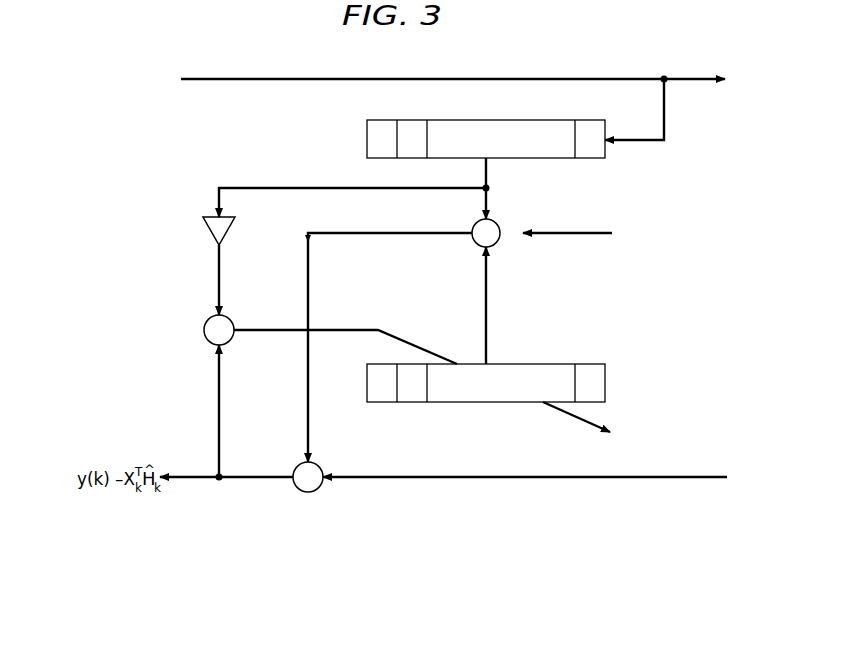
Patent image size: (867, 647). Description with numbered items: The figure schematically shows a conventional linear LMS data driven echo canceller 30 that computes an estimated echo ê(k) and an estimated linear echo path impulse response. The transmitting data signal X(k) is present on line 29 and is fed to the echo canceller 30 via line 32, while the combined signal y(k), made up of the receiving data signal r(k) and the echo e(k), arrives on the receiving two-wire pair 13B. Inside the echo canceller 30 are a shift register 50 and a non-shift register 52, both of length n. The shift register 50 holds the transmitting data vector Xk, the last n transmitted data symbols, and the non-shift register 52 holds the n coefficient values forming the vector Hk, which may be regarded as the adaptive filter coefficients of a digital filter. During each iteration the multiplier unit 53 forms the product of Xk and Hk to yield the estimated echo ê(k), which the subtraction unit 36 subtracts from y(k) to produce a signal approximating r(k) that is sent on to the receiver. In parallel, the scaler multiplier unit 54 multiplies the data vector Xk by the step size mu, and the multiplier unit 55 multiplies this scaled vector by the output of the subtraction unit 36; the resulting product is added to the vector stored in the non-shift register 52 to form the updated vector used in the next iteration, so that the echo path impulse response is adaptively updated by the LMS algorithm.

The line 29 is at (230, 79).
The line 32 is at (664, 118).
The shift register 50 is at (542, 120).
The scaler multiplier unit 54 is at (212, 215).
The multiplier unit 55 is at (208, 319).
The multiplier unit 53 is at (476, 251).
The echo canceller 30 is at (563, 233).
The non-shift register 52 is at (533, 364).
The receiving two-wire pair 13B is at (675, 477).
The subtraction unit 36 is at (308, 492).